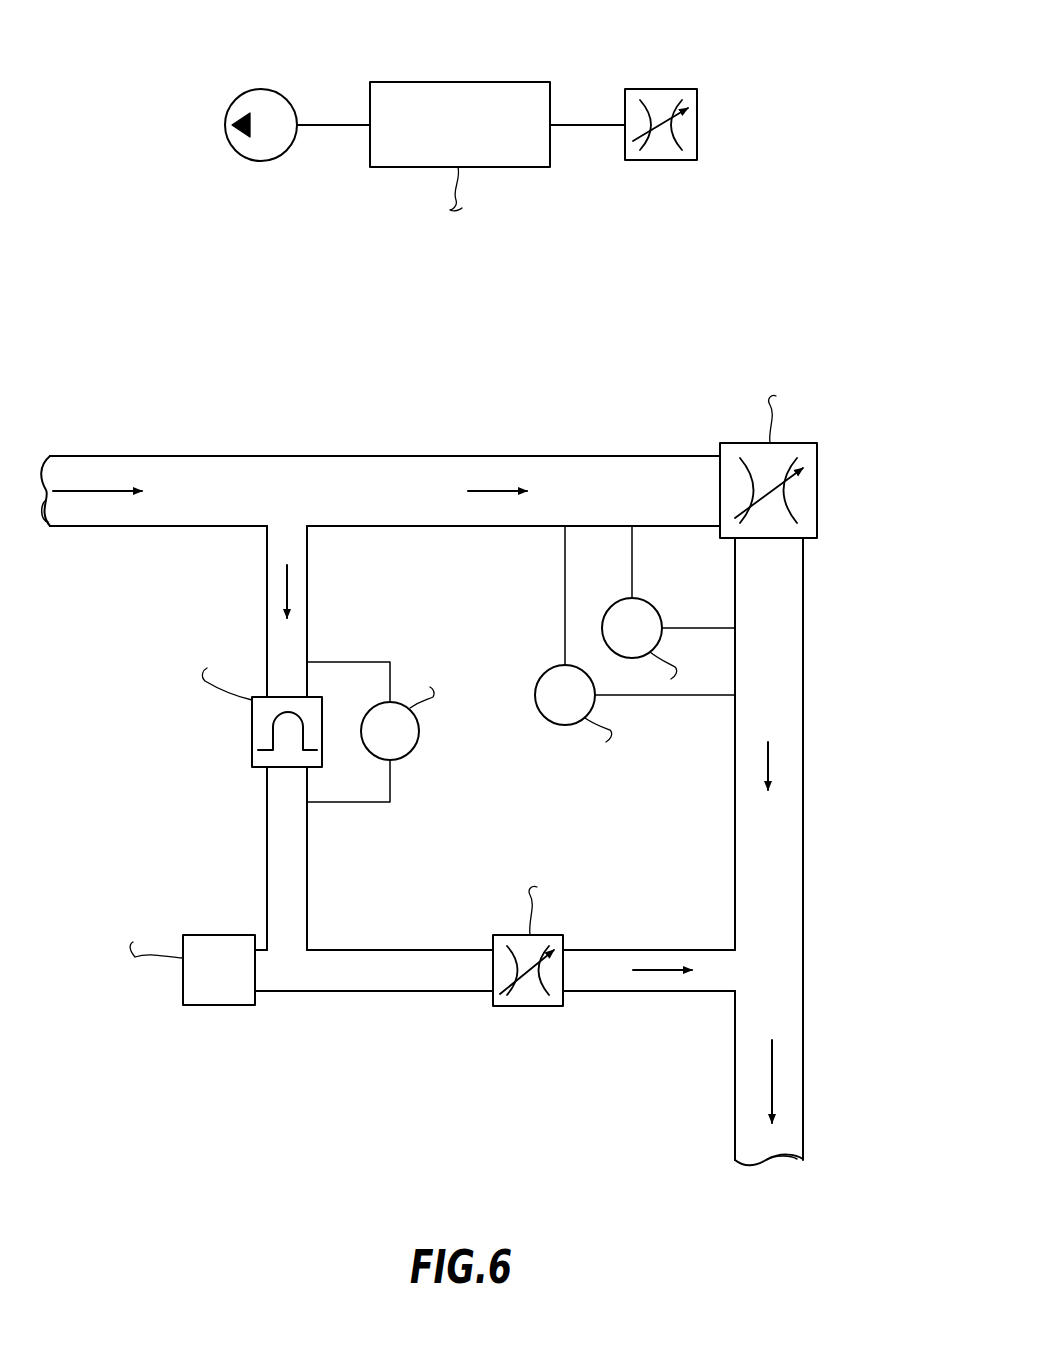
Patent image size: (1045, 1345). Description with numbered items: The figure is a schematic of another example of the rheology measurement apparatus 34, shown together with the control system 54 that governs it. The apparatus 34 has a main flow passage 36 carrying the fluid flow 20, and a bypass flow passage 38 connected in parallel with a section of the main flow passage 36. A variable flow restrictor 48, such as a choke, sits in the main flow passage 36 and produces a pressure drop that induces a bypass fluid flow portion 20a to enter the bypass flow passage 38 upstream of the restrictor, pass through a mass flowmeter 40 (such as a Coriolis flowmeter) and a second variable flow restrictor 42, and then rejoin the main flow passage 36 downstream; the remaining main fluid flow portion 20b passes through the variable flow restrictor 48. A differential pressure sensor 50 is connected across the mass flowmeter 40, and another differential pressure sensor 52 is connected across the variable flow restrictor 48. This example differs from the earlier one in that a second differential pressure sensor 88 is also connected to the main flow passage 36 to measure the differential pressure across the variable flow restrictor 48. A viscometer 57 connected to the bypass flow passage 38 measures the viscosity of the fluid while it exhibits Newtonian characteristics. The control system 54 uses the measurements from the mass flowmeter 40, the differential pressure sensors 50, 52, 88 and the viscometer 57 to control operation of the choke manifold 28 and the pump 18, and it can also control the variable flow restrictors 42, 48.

The pump 18 is at (252, 89).
The control system 54 is at (480, 82).
The choke manifold 28 is at (657, 89).
The rheology measurement apparatus 34 is at (826, 305).
The fluid flow 20 is at (90, 488).
The bypass fluid flow portion 20a is at (285, 580).
The main fluid flow portion 20b is at (490, 490).
The main flow passage 36 is at (188, 456).
The bypass flow passage 38 is at (266, 852).
The mass flowmeter 40 is at (252, 710).
The variable flow restrictor 42 is at (535, 1006).
The variable flow restrictor 48 is at (817, 500).
The differential pressure sensor 50 is at (419, 731).
The differential pressure sensor 52 is at (650, 604).
The second differential pressure sensor 88 is at (548, 672).
The viscometer 57 is at (220, 1005).